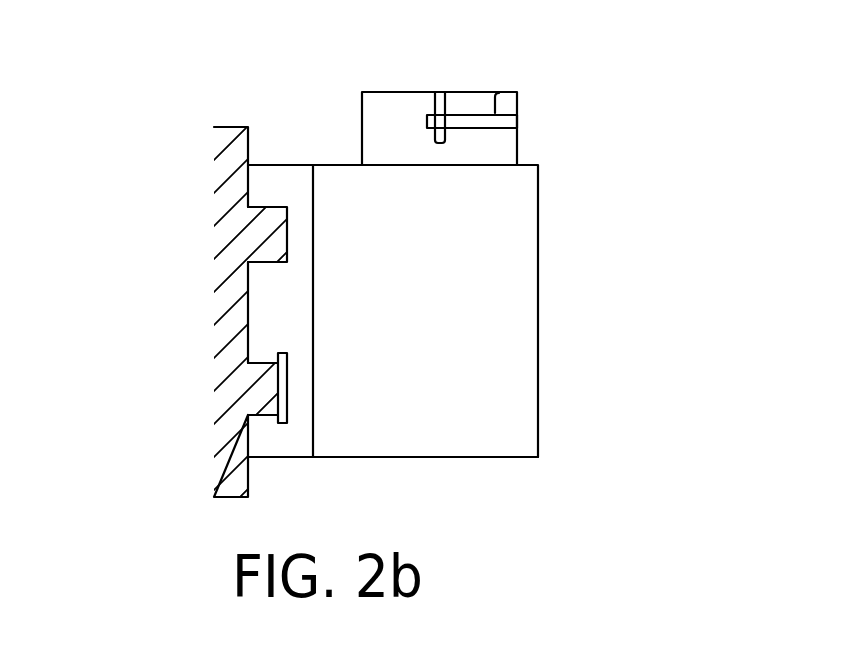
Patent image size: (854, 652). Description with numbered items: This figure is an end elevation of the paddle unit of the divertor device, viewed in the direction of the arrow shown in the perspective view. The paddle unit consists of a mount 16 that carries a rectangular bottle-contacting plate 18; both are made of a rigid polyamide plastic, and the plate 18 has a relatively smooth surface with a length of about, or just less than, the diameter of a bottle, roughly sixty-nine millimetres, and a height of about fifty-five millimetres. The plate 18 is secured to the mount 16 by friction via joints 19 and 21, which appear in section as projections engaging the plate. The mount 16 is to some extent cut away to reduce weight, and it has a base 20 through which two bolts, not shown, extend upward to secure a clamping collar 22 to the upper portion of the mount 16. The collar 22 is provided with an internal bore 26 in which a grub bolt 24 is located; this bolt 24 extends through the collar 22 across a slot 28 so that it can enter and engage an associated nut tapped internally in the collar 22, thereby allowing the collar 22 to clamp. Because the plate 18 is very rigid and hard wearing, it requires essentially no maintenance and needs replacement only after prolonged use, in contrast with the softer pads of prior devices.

The mount 16 is at (535, 310).
The bottle-contacting plate 18 is at (222, 329).
The joint 19 is at (283, 230).
The base 20 is at (430, 460).
The joint 21 is at (283, 390).
The clamping collar 22 is at (367, 108).
The grub bolt 24 is at (517, 118).
The internal bore 26 is at (499, 93).
The slot 28 is at (437, 92).